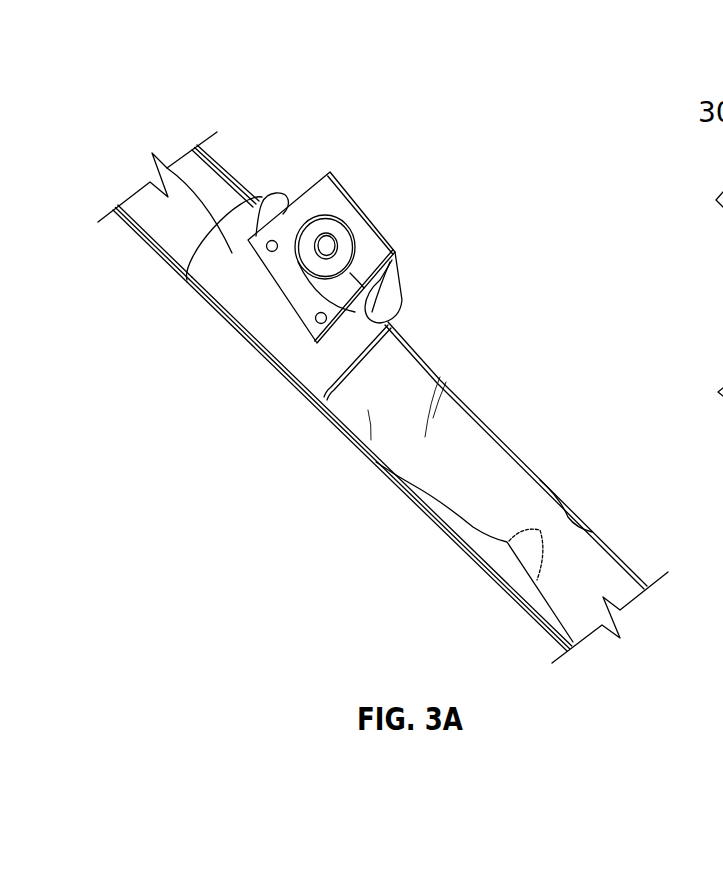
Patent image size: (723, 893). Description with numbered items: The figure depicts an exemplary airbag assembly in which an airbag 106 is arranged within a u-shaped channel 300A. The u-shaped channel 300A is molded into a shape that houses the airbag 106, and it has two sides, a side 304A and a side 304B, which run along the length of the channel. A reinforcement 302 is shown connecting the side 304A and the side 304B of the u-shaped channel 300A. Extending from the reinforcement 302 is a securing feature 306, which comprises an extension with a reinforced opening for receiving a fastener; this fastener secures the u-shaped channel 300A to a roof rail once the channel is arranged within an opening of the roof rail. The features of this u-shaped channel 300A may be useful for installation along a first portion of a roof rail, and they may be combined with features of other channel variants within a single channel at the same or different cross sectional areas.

The reinforcement 302 is at (178, 162).
The securing feature 306 is at (363, 237).
The side 304B is at (493, 429).
The side 304A is at (395, 487).
The u-shaped channel 300A is at (470, 563).
The airbag 106 is at (568, 563).